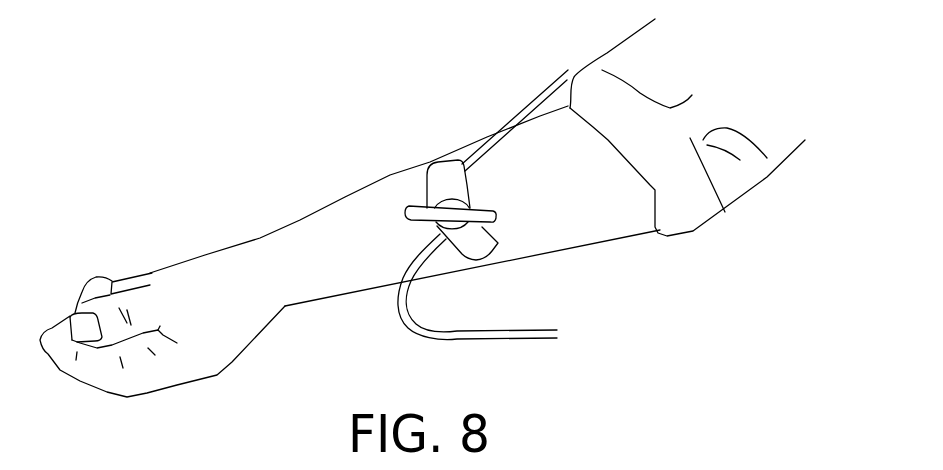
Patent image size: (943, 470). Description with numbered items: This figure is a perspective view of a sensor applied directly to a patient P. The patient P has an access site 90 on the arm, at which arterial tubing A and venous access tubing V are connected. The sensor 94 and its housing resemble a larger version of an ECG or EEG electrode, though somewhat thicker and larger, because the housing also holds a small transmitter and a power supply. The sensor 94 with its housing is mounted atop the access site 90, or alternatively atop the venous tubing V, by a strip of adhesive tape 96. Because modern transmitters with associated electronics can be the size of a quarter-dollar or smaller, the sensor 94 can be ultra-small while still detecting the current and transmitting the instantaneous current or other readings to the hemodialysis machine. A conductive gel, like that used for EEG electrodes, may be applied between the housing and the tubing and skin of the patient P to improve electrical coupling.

The access site 90 is at (498, 247).
The sensor 94 is at (443, 193).
The strip of adhesive tape 96 is at (403, 208).
The venous access tubing V is at (533, 99).
The patient P is at (377, 294).
The arterial tubing A is at (453, 342).